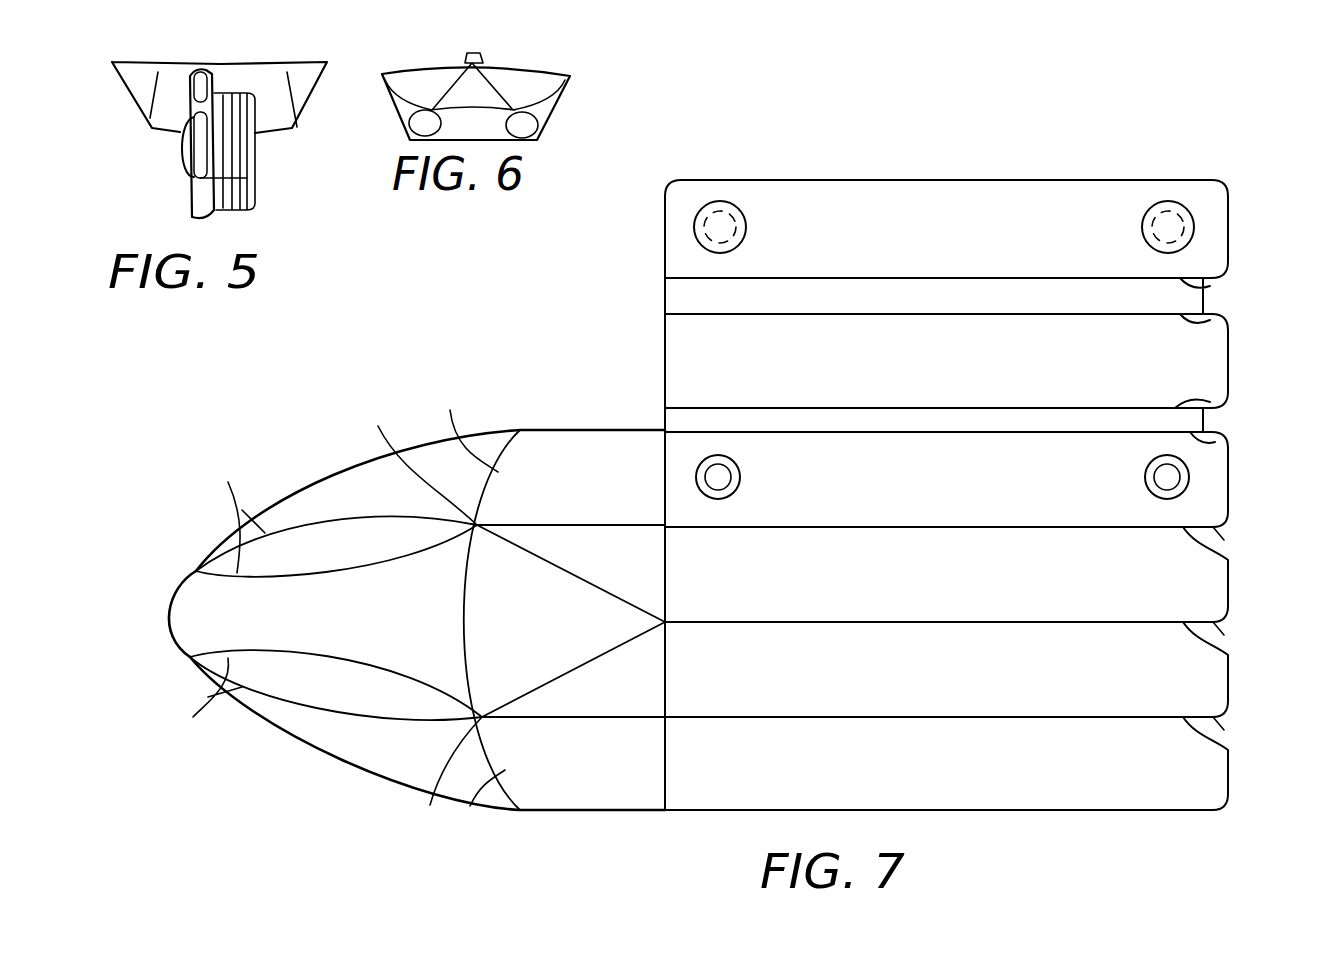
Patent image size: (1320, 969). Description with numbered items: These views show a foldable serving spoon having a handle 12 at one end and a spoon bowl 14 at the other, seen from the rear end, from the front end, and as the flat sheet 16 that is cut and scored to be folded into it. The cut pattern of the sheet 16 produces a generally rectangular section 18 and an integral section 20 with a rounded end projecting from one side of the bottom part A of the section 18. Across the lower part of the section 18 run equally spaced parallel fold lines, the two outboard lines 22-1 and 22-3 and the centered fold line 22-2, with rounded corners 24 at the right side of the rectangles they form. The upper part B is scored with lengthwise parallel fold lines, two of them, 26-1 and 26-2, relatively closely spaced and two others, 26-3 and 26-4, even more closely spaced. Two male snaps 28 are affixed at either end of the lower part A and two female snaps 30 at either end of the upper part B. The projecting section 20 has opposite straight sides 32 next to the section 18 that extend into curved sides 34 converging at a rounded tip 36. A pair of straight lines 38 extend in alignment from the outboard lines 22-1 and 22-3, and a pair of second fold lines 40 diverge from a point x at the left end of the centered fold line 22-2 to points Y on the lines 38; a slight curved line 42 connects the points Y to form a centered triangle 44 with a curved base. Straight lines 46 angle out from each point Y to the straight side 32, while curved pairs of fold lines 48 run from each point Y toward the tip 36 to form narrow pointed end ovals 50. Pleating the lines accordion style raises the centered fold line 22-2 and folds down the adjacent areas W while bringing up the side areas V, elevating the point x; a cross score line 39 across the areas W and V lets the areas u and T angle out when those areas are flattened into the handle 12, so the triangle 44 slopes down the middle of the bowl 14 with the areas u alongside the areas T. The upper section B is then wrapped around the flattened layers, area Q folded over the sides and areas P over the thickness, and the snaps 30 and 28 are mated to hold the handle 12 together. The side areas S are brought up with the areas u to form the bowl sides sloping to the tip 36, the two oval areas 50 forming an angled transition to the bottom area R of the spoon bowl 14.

In FIG. 5, the handle 12 is at (196, 208).
In FIG. 5, the spoon bowl 14 is at (132, 93).
In FIG. 6, the spoon bowl 14 is at (552, 116).
In FIG. 7, the flat sheet 16 is at (985, 486).
In FIG. 7, the generally rectangular section 18 is at (1233, 775).
In FIG. 7, the integral section with rounded end 20 is at (469, 599).
In FIG. 7, the outboard fold line 22-1 is at (1228, 555).
In FIG. 7, the centered fold line 22-2 is at (1228, 610).
In FIG. 7, the outboard fold line 22-3 is at (1228, 692).
In FIG. 7, the rounded corners 24 is at (1228, 438).
In FIG. 7, the lengthwise parallel fold line 26-1 is at (1205, 278).
In FIG. 7, the lengthwise parallel fold line 26-2 is at (1205, 318).
In FIG. 7, the lengthwise parallel fold line 26-3 is at (1180, 407).
In FIG. 7, the lengthwise parallel fold line 26-4 is at (1185, 430).
In FIG. 5, the male snaps 28 is at (186, 152).
In FIG. 7, the male snaps 28 is at (700, 470).
In FIG. 5, the female snaps 30 is at (247, 178).
In FIG. 7, the female snaps 30 is at (748, 235).
In FIG. 7, the straight sides 32 is at (525, 426).
In FIG. 7, the curved sides 34 is at (320, 478).
In FIG. 7, the rounded tip 36 is at (165, 606).
In FIG. 7, the straight lines 38 is at (555, 522).
In FIG. 7, the cross score line 39 is at (668, 505).
In FIG. 7, the second fold lines 40 is at (508, 543).
In FIG. 7, the slight curved line 42 is at (462, 611).
In FIG. 7, the centered triangle 44 is at (571, 621).
In FIG. 7, the straight lines 46 is at (472, 607).
In FIG. 7, the curved pairs of fold lines 48 is at (216, 611).
In FIG. 7, the narrow pointed end ovals 50 is at (336, 618).
In FIG. 7, the bottom part of section 18 A is at (993, 805).
In FIG. 7, the upper part of section 18 B is at (1228, 203).
In FIG. 7, the area P is at (890, 416).
In FIG. 7, the area Q is at (844, 286).
In FIG. 7, the bottom area R is at (312, 604).
In FIG. 7, the side areas S is at (337, 604).
In FIG. 7, the area T is at (621, 607).
In FIG. 7, the side area U u is at (597, 599).
In FIG. 7, the side areas V is at (862, 620).
In FIG. 7, the adjacent areas W is at (863, 623).
In FIG. 7, the point X x is at (667, 620).
In FIG. 7, the point Y is at (422, 611).